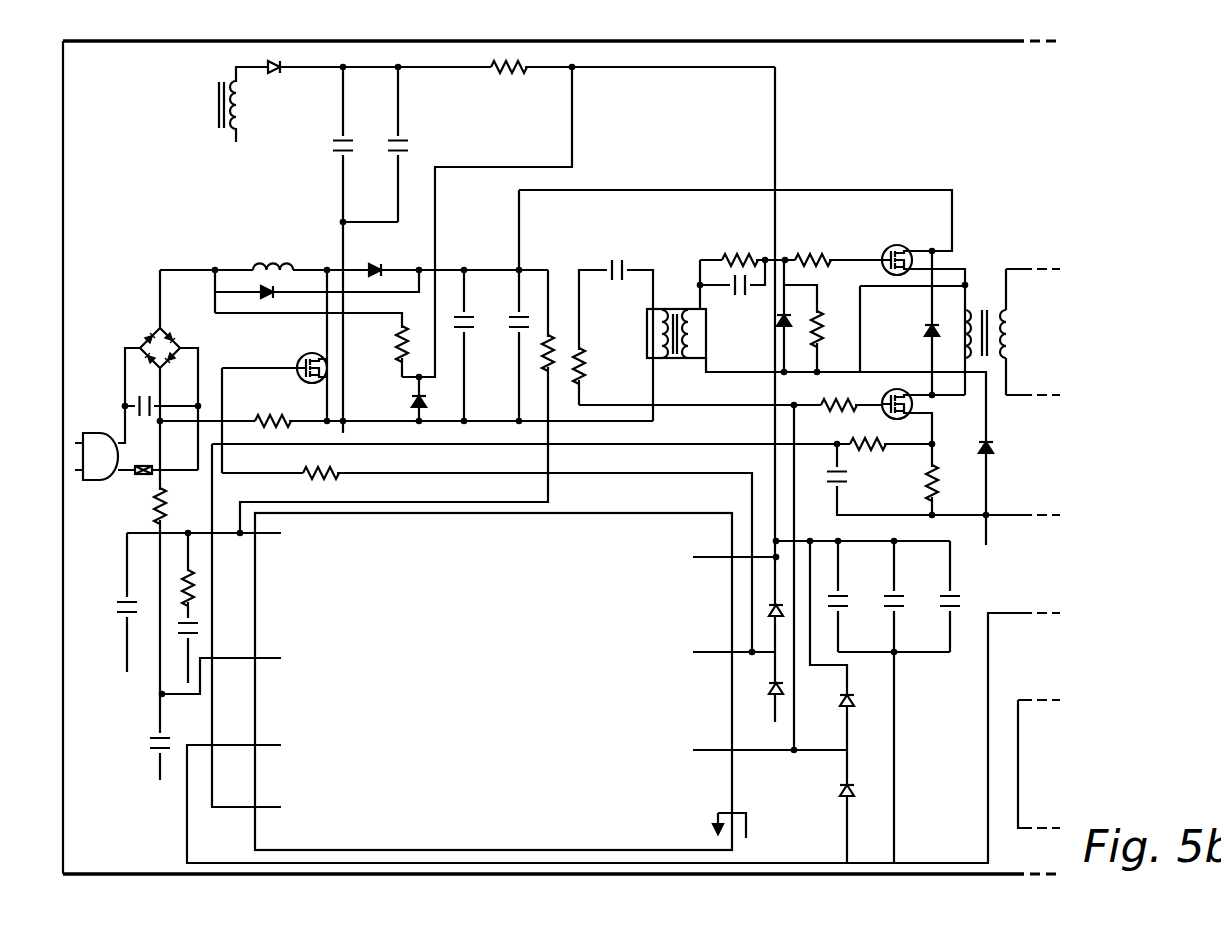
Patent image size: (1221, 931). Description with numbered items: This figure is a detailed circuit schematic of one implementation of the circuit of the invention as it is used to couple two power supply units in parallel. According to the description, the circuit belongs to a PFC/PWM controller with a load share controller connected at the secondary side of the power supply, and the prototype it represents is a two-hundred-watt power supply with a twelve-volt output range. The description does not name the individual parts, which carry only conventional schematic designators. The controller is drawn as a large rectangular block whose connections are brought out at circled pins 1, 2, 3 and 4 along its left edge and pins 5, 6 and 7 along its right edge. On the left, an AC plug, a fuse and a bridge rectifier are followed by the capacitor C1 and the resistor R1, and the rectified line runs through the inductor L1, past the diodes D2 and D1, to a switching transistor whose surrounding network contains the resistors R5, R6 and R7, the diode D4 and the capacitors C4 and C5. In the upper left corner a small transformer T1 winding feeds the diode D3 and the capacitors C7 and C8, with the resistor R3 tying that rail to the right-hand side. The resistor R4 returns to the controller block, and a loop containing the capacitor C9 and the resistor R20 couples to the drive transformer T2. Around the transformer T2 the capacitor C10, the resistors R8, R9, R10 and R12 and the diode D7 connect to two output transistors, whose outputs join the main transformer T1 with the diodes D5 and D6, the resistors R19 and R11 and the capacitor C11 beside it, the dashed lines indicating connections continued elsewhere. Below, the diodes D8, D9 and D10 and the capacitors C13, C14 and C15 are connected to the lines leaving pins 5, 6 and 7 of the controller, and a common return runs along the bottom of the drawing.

The transformer T1 is at (612, 219).
The transformer T2 is at (676, 321).
The inductor L1 is at (273, 256).
The diode D1 is at (372, 260).
The diode D2 is at (281, 285).
The diode D3 is at (286, 78).
The diode D4 is at (400, 403).
The diode D5 is at (916, 333).
The diode D6 is at (1001, 450).
The zener diode D7 is at (770, 330).
The diode D8 is at (766, 611).
The diode D9 is at (858, 703).
The diode D10 is at (862, 793).
The resistor R1 is at (174, 506).
The resistor R3 is at (509, 83).
The resistor R4 is at (321, 484).
The resistor R5 is at (273, 409).
The resistor R6 is at (385, 344).
The resistor R7 is at (558, 346).
The resistor R8 is at (740, 250).
The resistor R9 is at (813, 250).
The resistor R10 is at (838, 395).
The resistor R11 is at (950, 483).
The resistor R12 is at (835, 329).
The resistor R19 is at (867, 460).
The resistor R20 is at (598, 366).
The capacitor C1 is at (145, 395).
The capacitor C4 is at (481, 333).
The capacitor C5 is at (504, 323).
The capacitor C7 is at (356, 145).
The capacitor C8 is at (411, 145).
The capacitor C9 is at (615, 258).
The capacitor C10 is at (735, 299).
The capacitor C11 is at (822, 481).
The capacitor C13 is at (853, 589).
The capacitor C14 is at (908, 589).
The capacitor C15 is at (965, 589).
The controller pin 1 is at (293, 533).
The controller pin 2 is at (293, 658).
The controller pin 3 is at (293, 745).
The controller pin 4 is at (293, 807).
The controller pin 5 is at (680, 557).
The controller pin 6 is at (680, 652).
The controller pin 7 is at (680, 750).